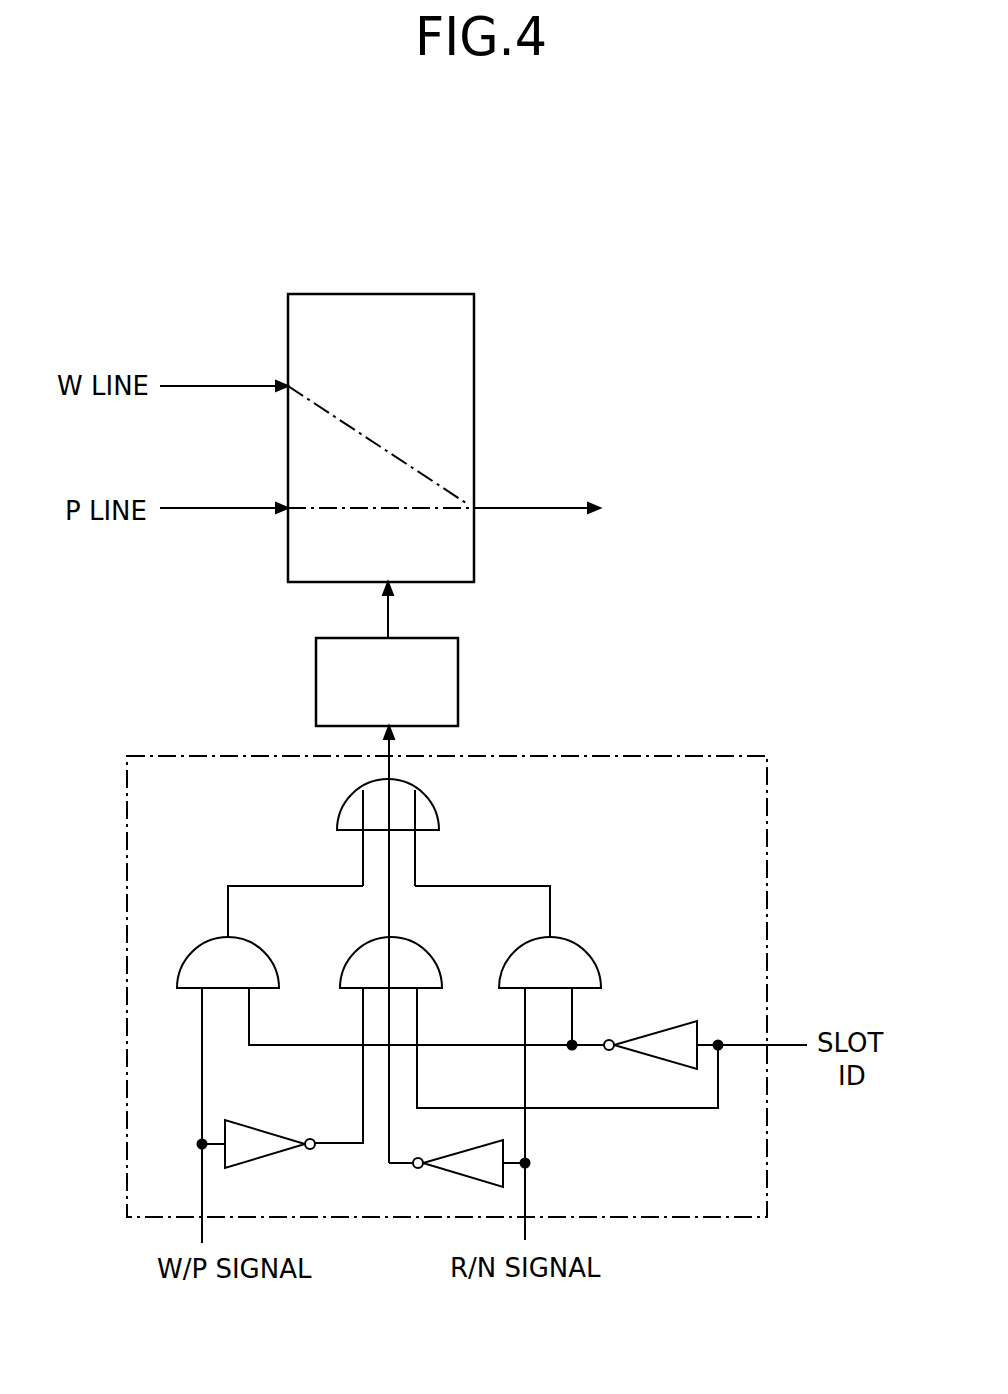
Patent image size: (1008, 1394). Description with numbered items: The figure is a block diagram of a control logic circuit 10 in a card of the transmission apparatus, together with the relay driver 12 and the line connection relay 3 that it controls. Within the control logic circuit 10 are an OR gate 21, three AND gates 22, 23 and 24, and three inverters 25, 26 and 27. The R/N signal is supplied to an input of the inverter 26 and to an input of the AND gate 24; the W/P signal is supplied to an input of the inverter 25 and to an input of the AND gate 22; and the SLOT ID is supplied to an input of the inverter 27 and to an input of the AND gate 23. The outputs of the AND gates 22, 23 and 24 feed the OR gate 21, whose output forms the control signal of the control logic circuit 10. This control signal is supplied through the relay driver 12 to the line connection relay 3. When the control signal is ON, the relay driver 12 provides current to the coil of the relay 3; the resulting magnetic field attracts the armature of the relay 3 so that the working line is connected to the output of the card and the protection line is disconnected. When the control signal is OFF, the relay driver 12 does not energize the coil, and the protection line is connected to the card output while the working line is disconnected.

The line connection relay 3 is at (474, 393).
The relay driver 12 is at (458, 672).
The control logic circuit 10 is at (560, 756).
The OR gate 21 is at (389, 831).
The AND gate 22 is at (391, 1080).
The AND gate 23 is at (517, 1040).
The AND gate 24 is at (561, 1076).
The inverter 25 is at (281, 1130).
The inverter 26 is at (471, 1151).
The inverter 27 is at (688, 1032).